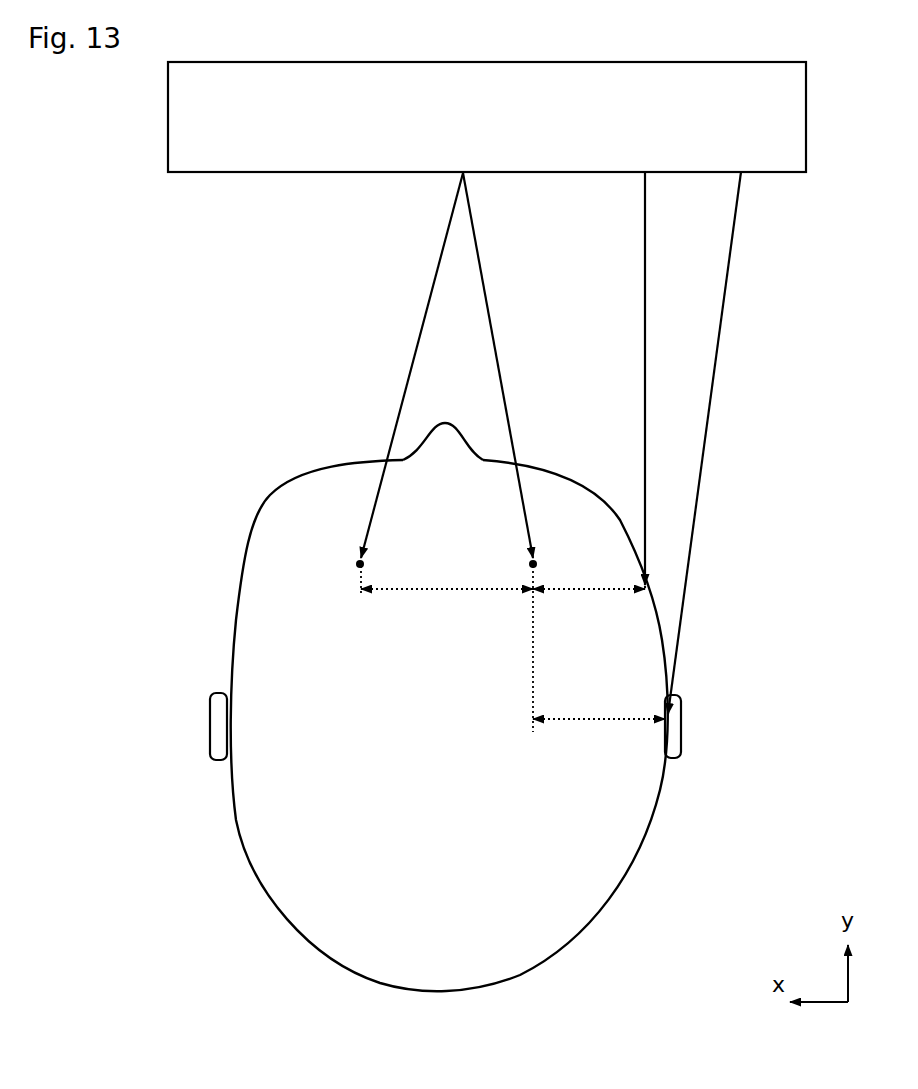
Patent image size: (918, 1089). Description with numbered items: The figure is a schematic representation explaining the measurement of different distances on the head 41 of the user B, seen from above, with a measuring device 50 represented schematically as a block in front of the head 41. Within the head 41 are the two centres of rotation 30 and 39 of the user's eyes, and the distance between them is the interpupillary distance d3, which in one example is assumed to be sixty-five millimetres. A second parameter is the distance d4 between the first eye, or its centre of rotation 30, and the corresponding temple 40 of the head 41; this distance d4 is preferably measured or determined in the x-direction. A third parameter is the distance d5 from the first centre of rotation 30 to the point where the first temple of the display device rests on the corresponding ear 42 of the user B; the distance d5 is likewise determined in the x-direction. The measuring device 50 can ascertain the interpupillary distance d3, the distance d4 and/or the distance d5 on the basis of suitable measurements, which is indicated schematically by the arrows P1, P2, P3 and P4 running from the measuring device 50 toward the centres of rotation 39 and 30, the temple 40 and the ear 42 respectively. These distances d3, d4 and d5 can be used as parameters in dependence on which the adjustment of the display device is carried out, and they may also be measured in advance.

The measuring device 50 is at (168, 148).
The head 41 is at (662, 803).
The ear 42 is at (682, 716).
The user B is at (268, 887).
The centre of rotation 39 is at (357, 568).
The centre of rotation 30 is at (538, 568).
The temple 40 is at (646, 589).
The arrow P1 is at (428, 296).
The arrow P2 is at (495, 338).
The arrow P3 is at (645, 248).
The arrow P4 is at (720, 337).
The interpupillary distance d3 is at (447, 646).
The distance d4 is at (589, 574).
The distance d5 is at (599, 703).